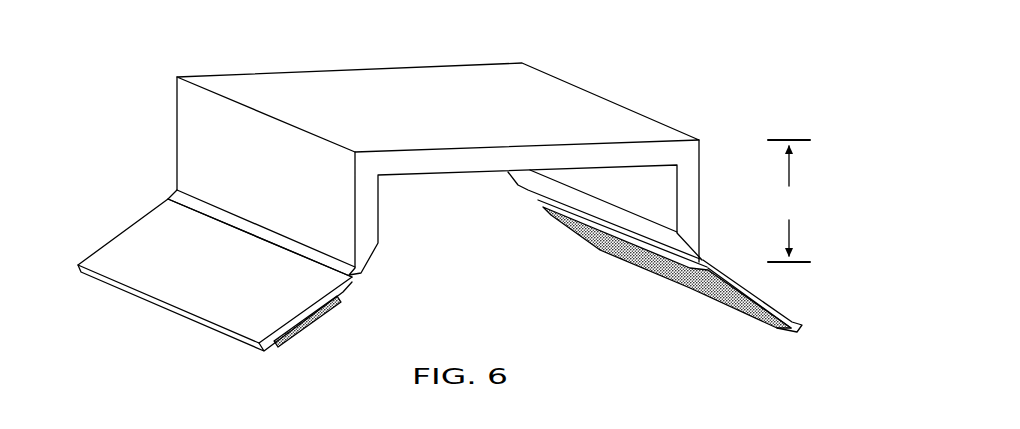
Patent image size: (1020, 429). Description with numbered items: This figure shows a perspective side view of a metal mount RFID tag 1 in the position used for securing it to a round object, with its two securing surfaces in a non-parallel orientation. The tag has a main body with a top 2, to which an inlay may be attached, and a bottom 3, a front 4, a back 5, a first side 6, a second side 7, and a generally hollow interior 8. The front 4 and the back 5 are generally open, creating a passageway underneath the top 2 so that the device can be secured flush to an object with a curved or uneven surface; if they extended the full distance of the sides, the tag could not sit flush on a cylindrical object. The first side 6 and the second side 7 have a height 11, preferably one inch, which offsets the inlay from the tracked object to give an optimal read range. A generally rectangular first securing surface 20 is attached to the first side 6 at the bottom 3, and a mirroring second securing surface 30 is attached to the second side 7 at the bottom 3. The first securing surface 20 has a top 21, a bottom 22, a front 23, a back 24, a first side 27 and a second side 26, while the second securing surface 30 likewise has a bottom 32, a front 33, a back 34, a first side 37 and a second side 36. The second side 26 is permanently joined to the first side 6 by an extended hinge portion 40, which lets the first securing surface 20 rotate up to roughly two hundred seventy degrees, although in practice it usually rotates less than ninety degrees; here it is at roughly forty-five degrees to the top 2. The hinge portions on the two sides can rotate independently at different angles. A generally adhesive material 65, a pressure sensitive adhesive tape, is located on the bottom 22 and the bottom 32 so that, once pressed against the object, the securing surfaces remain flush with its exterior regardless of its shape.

The metal mount RFID tag 1 is at (146, 50).
The top 2 is at (580, 102).
The bottom 3 is at (372, 258).
The front 4 is at (425, 158).
The back 5 is at (387, 67).
The first side 6 is at (198, 125).
The second side 7 is at (702, 160).
The generally hollow interior 8 is at (487, 187).
The height 11 is at (789, 201).
The first securing surface 20 is at (137, 243).
The top 21 is at (113, 270).
The bottom 22 is at (267, 348).
The front 23 is at (307, 322).
The back 24 is at (145, 213).
The second side 26 is at (278, 247).
The first side 27 is at (173, 313).
The second securing surface 30 is at (737, 278).
The bottom 32 is at (753, 320).
The front 33 is at (802, 325).
The back 34 is at (570, 230).
The second side 36 is at (703, 260).
The first side 37 is at (688, 290).
The extended hinge portion 40 is at (212, 210).
The adhesive material 65 is at (635, 262).